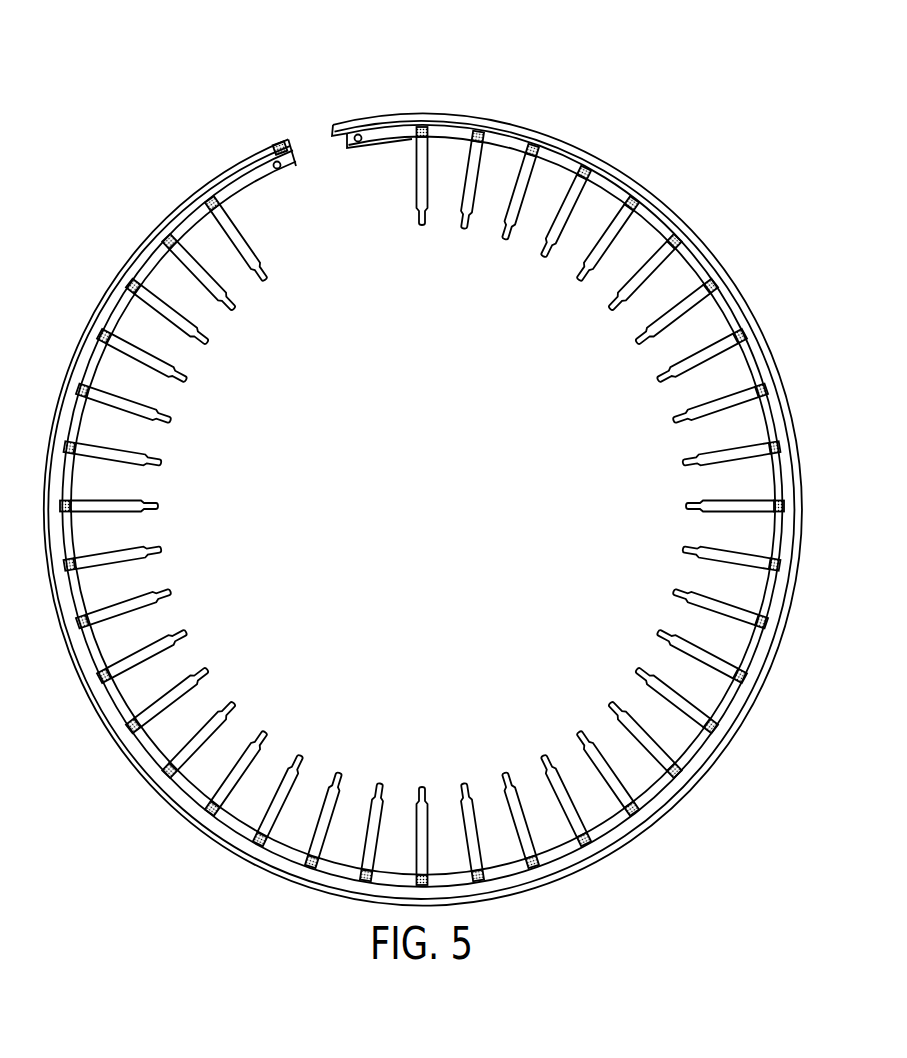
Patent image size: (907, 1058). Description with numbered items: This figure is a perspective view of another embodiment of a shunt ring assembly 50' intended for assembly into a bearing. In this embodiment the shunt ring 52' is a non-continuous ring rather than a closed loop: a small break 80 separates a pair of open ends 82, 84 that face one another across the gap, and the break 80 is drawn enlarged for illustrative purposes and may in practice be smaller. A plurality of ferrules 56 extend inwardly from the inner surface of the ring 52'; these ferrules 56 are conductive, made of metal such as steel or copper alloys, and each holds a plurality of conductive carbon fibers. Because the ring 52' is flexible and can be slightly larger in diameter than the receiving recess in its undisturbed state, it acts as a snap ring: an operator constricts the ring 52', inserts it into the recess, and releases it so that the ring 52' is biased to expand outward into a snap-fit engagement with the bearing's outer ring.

The shunt ring assembly 50' is at (438, 510).
The shunt ring 52' is at (421, 491).
The ferrule 56 is at (124, 406).
The break 80 is at (304, 108).
The open end 82 is at (278, 148).
The open end 84 is at (335, 118).